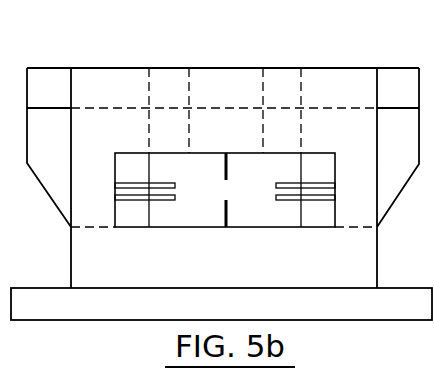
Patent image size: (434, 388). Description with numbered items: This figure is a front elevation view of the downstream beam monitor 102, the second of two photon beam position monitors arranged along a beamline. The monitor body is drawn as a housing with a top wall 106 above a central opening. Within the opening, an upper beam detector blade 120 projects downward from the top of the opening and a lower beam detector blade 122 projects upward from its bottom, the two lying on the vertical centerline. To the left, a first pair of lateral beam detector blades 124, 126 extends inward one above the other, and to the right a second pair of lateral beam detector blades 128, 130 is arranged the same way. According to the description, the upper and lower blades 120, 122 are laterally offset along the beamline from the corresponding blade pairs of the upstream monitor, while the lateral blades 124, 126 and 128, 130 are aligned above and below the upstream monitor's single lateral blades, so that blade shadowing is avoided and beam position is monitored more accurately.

The downstream beam monitor 102 is at (120, 65).
The top wall 106 is at (243, 68).
The upper beam detector blade 120 is at (223, 172).
The lower beam detector blade 122 is at (223, 203).
The first pair lateral beam detector blade 124 is at (148, 183).
The first pair lateral beam detector blade 126 is at (168, 201).
The second pair lateral beam detector blade 128 is at (297, 183).
The second pair lateral beam detector blade 130 is at (285, 201).